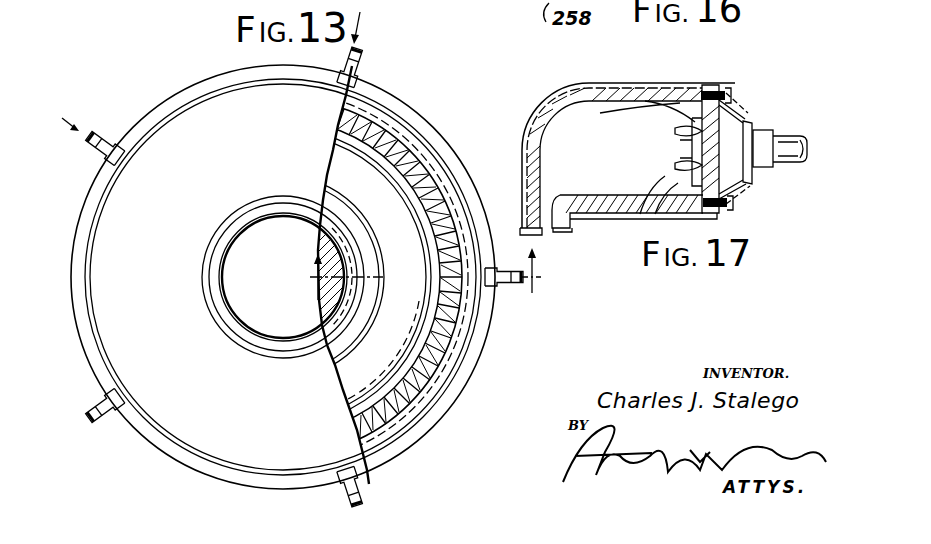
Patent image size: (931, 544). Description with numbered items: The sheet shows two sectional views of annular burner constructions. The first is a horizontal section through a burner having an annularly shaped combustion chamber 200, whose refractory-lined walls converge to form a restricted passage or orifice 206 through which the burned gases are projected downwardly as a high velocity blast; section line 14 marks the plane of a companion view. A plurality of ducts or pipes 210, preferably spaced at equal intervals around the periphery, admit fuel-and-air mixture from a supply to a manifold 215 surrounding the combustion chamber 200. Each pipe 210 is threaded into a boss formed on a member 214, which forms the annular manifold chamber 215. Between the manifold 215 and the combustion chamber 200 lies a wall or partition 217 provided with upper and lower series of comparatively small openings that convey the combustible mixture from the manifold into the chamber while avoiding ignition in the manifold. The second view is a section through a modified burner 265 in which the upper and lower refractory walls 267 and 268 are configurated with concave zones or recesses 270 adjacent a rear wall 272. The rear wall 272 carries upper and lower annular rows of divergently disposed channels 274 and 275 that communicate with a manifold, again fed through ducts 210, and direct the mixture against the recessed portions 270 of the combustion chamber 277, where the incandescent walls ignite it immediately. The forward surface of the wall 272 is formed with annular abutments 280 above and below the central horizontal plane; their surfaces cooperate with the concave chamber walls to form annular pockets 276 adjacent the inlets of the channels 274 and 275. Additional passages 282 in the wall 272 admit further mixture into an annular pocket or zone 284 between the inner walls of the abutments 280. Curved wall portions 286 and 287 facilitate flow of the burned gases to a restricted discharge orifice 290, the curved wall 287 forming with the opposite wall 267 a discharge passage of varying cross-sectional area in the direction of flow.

In FIG. 13, the section line 14 is at (305, 164).
In FIG. 13, the combustion chamber 200 is at (348, 163).
In FIG. 13, the restricted passage or orifice 206 is at (322, 233).
In FIG. 13, the ducts or pipes 210 is at (96, 126).
In FIG. 17, the ducts or pipes 210 is at (775, 133).
In FIG. 13, the member 214 is at (477, 345).
In FIG. 13, the manifold 215 is at (462, 166).
In FIG. 17, the manifold 215 is at (748, 162).
In FIG. 13, the wall or partition 217 is at (410, 420).
In FIG. 17, the burner 265 is at (662, 67).
In FIG. 17, the upper wall 267 is at (616, 107).
In FIG. 17, the lower wall 268 is at (608, 195).
In FIG. 17, the concave zones or recesses 270 is at (672, 110).
In FIG. 17, the rear wall 272 is at (700, 148).
In FIG. 17, the openings or channels 274 is at (735, 108).
In FIG. 17, the openings or channels 275 is at (722, 198).
In FIG. 17, the annular pockets 276 is at (682, 110).
In FIG. 17, the combustion chamber 277 is at (608, 160).
In FIG. 17, the annular projections or abutments 280 is at (680, 132).
In FIG. 17, the passages or channels 282 is at (746, 118).
In FIG. 17, the annular pocket or zone 284 is at (738, 180).
In FIG. 17, the curved wall portion 286 is at (540, 130).
In FIG. 17, the curved wall 287 is at (573, 232).
In FIG. 17, the restricted discharge passage or orifice 290 is at (543, 230).